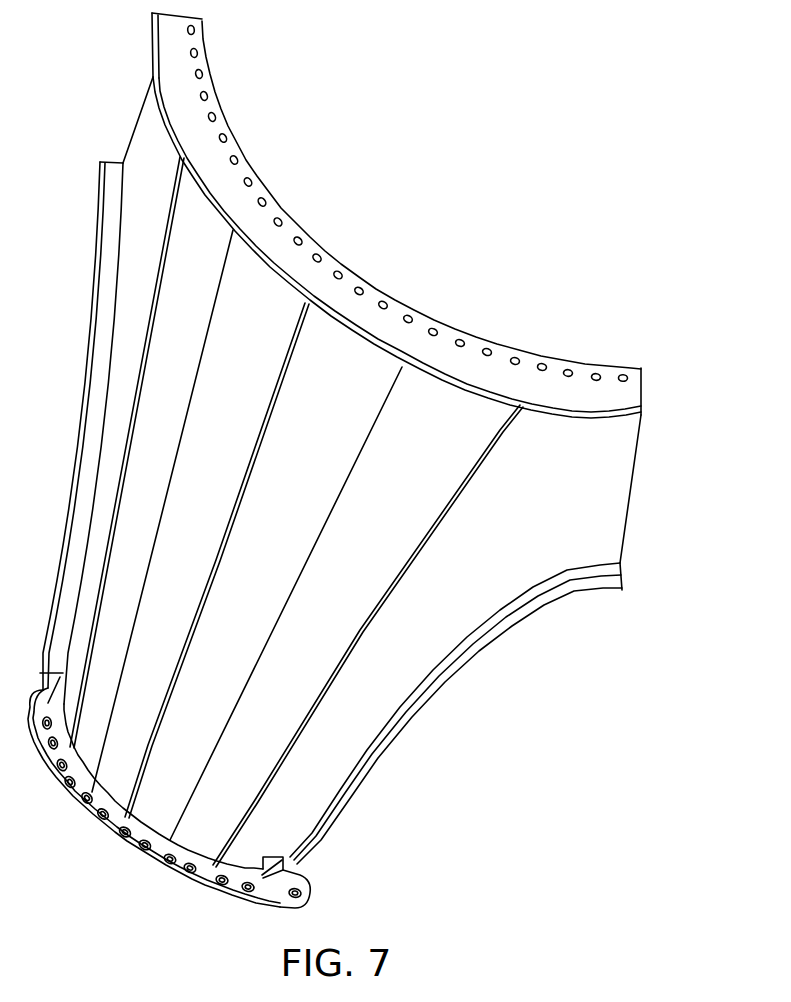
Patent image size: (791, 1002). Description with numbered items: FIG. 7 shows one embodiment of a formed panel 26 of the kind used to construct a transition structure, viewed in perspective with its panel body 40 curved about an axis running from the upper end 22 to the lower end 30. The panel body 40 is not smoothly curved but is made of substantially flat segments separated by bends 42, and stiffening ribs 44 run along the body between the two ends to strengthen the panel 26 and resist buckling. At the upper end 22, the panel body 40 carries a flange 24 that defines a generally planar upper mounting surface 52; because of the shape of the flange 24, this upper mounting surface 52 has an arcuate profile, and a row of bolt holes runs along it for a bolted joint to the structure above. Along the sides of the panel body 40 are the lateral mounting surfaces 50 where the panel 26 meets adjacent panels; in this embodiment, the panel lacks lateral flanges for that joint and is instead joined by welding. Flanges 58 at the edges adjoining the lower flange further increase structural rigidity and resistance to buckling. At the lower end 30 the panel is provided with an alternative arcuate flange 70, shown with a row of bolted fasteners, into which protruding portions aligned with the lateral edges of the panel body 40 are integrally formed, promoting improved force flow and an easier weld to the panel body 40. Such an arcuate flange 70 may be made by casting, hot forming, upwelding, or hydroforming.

The upper end 22 is at (557, 428).
The flange 24 is at (415, 295).
The formed panel 26 is at (455, 113).
The lower end 30 is at (112, 777).
The panel body 40 is at (415, 665).
The bends 42 is at (190, 410).
The stiffening ribs 44 is at (160, 287).
The lateral mounting surfaces 50 is at (133, 118).
The upper mounting surface 52 is at (475, 352).
The flanges 58 is at (500, 648).
The arcuate flange 70 is at (152, 881).